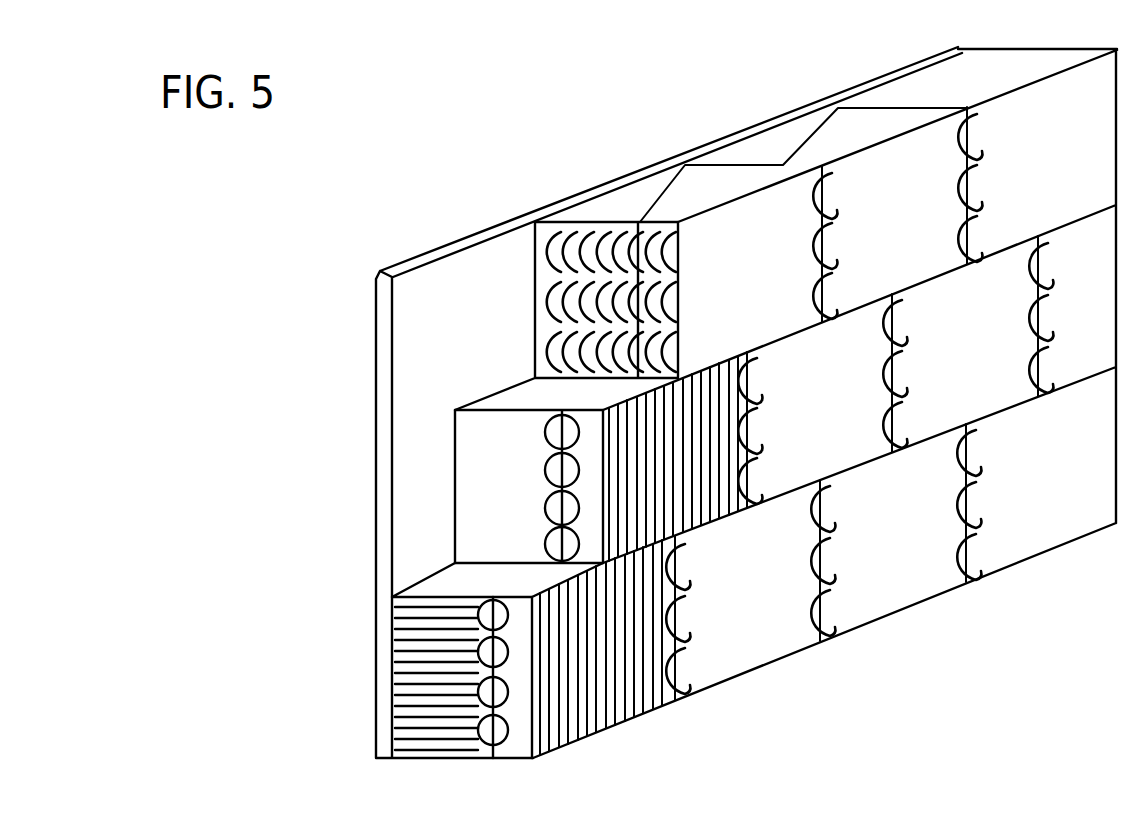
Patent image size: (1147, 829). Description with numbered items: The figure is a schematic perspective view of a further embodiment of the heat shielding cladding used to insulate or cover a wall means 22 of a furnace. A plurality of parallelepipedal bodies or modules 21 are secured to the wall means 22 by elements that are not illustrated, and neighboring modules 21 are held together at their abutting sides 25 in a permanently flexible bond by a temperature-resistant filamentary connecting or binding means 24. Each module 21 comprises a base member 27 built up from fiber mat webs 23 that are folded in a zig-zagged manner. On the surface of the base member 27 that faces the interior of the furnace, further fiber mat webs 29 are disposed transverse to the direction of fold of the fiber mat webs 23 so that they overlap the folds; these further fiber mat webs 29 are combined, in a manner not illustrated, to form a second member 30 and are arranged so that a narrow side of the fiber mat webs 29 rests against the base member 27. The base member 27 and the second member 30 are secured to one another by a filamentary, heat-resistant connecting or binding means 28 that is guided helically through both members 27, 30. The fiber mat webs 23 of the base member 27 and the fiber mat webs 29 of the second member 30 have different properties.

The parallelepipedal body or module 21 is at (916, 93).
The wall means 22 is at (448, 303).
The fiber mat webs 23 is at (420, 673).
The filamentary connecting or binding means 24 is at (688, 578).
The abutting sides 25 is at (722, 162).
The base member 27 is at (470, 587).
The filamentary and heat-resistant connecting or binding means 28 is at (545, 468).
The fiber mat webs 29 is at (580, 678).
The second member 30 is at (517, 680).